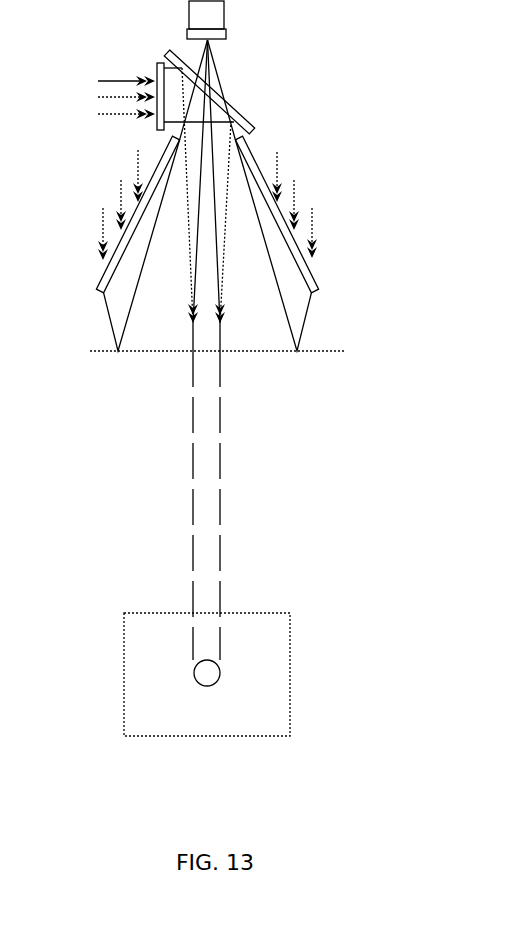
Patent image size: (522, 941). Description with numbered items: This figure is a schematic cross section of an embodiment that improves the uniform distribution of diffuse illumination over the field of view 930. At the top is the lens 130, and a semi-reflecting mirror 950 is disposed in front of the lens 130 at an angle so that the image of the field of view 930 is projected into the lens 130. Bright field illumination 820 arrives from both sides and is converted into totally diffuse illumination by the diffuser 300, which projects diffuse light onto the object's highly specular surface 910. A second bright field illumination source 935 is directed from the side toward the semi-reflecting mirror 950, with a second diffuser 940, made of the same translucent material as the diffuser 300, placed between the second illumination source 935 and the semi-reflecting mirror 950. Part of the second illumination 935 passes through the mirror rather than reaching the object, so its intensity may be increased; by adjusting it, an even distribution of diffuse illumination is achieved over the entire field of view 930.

The lens 130 is at (226, 13).
The second diffuser 940 is at (157, 63).
The second bright field illumination source 935 is at (61, 96).
The semi-reflecting mirror 950 is at (238, 114).
The diffuser 300 is at (104, 273).
The bright field illumination 820 is at (89, 161).
The highly specular surface 910 is at (330, 334).
The field of view 930 is at (289, 622).